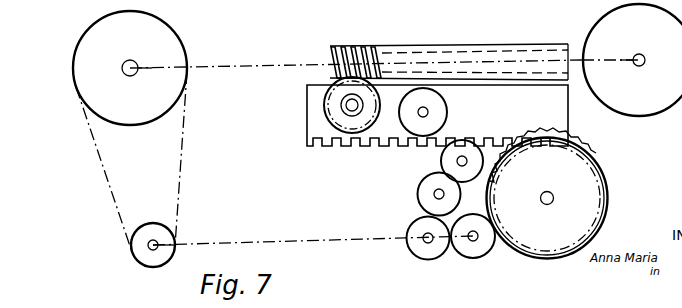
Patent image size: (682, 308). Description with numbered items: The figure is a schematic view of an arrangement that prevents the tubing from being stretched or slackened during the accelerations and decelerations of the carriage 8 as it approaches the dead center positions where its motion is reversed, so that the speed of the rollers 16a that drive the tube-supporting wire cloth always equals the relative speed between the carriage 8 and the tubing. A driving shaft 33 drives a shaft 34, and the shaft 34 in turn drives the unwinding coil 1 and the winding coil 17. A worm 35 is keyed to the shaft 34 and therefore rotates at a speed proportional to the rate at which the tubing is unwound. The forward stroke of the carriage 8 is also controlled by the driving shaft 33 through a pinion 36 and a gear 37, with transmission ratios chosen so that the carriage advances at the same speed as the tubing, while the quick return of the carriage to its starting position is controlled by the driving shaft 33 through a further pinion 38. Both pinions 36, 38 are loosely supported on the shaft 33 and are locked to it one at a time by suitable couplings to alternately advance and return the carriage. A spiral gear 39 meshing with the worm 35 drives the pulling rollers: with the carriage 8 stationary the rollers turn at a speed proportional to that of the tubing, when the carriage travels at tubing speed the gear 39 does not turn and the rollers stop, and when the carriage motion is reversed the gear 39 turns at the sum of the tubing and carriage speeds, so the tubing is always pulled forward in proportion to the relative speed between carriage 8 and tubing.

The unwinding coil 1 is at (163, 46).
The carriage 8 is at (302, 124).
The rollers 16a is at (415, 125).
The winding coil 17 is at (614, 95).
The driving shaft 33 is at (262, 241).
The shaft 34 is at (244, 64).
The worm 35 is at (410, 52).
The pinion 36 is at (487, 250).
The gear 37 is at (580, 183).
The pinion 38 is at (433, 250).
The spiral gear 39 is at (335, 148).